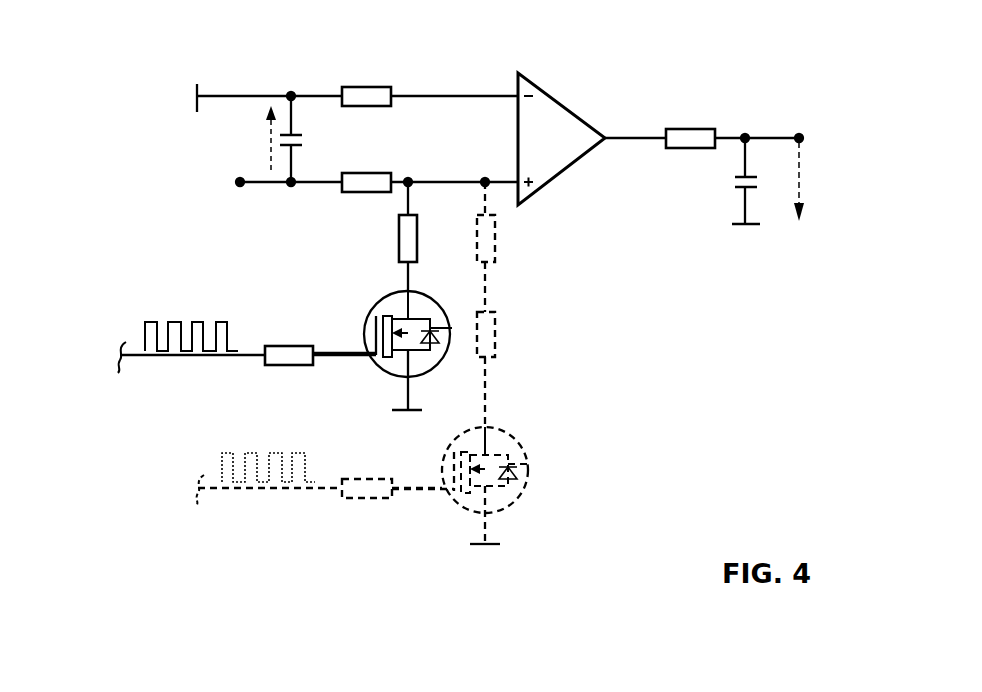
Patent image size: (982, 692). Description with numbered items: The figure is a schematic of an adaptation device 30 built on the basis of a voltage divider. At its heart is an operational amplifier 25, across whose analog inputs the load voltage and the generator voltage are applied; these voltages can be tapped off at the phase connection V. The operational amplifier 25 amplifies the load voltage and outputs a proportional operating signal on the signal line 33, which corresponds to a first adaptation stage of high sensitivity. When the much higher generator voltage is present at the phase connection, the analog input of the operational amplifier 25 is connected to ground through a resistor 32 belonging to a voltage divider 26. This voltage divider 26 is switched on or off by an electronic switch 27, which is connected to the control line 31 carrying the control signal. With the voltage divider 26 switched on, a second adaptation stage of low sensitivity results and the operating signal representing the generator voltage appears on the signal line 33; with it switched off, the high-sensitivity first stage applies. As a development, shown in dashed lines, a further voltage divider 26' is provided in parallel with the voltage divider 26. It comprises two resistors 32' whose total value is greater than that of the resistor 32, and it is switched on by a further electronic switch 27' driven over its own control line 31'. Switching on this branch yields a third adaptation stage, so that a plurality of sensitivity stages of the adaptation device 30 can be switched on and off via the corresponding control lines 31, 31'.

The operational amplifier 25 is at (563, 128).
The voltage divider 26 is at (361, 304).
The electronic switch 27 is at (382, 358).
The adaptation device 30 is at (172, 226).
The control line 31 is at (205, 373).
The resistor 32 is at (343, 241).
The signal line 33 is at (780, 137).
The further voltage divider 26' is at (406, 368).
The electronic switch 27' is at (494, 490).
The control line 31' is at (319, 502).
The resistors 32' is at (546, 304).